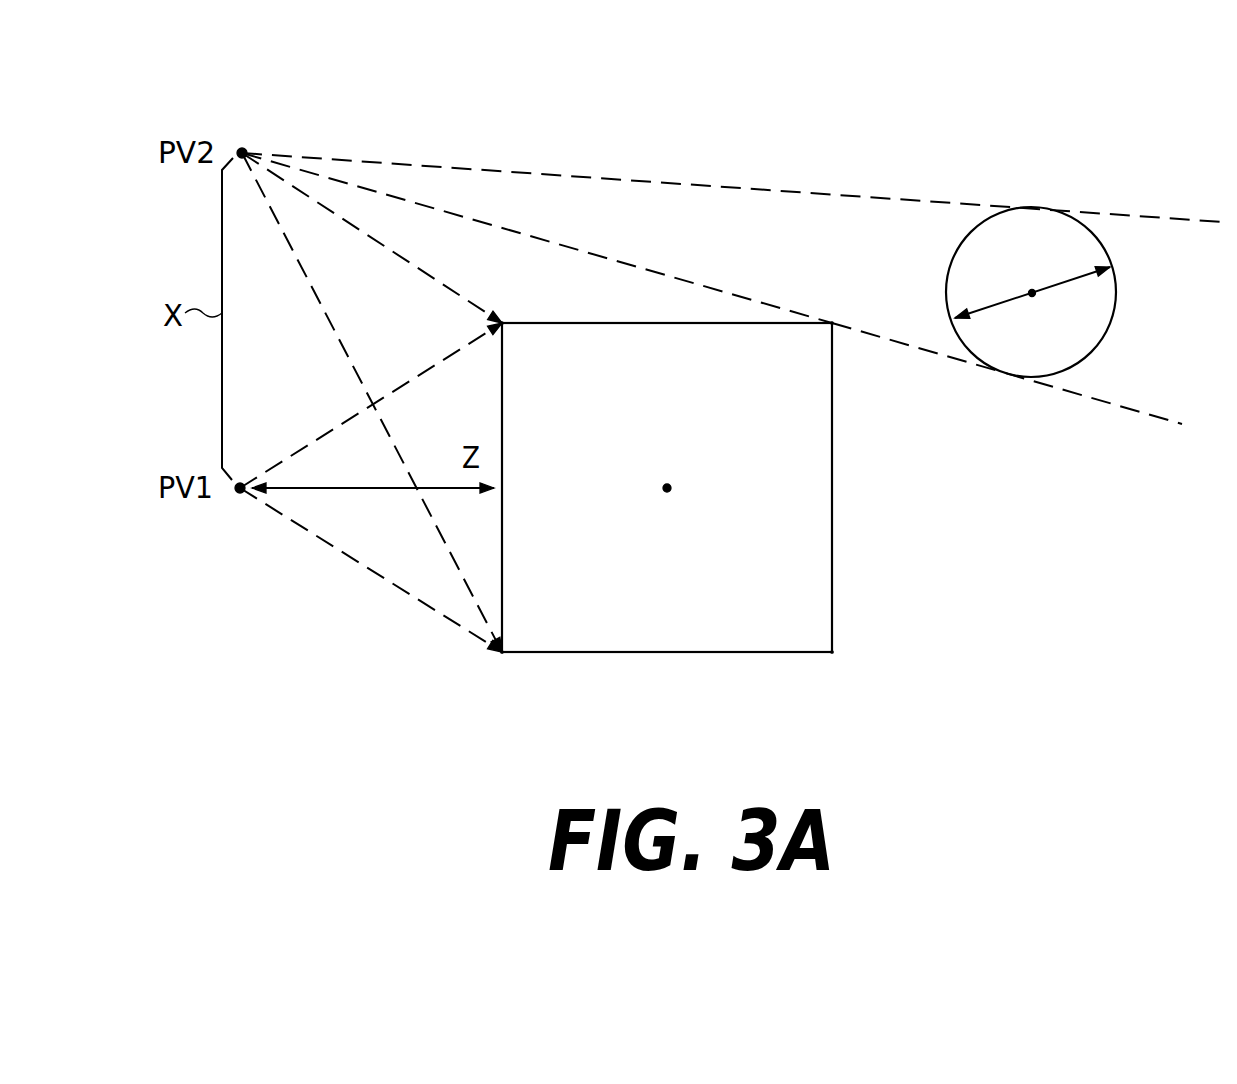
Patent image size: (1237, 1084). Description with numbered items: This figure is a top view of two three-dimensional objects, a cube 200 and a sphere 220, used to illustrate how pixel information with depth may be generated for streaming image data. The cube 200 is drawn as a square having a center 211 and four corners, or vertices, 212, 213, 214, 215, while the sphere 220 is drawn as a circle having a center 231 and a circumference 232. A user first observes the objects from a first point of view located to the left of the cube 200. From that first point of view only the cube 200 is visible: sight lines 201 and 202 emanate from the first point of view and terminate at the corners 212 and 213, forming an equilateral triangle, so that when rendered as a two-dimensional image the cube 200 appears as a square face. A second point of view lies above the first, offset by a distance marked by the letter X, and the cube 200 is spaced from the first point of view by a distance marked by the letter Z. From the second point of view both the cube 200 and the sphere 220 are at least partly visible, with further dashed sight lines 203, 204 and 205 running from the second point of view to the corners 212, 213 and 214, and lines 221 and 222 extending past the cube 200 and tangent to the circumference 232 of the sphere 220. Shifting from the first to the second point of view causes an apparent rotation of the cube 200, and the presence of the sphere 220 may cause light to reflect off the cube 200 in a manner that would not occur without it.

The cube 200 is at (684, 504).
The sight line 201 is at (315, 538).
The sight line 202 is at (287, 453).
The line from PV2 to corner 212 203 is at (343, 343).
The line from PV2 to corner 213 204 is at (375, 240).
The line from PV2 to corner 214 205 is at (660, 275).
The center 211 is at (694, 489).
The corner 212 is at (502, 674).
The corner 213 is at (513, 301).
The corner 214 is at (834, 301).
The corner 215 is at (860, 656).
The sphere 220 is at (1080, 298).
The lower tangent line to sphere 221 is at (893, 338).
The upper tangent line to sphere 222 is at (670, 182).
The center 231 is at (1030, 290).
The circumference 232 is at (1118, 290).